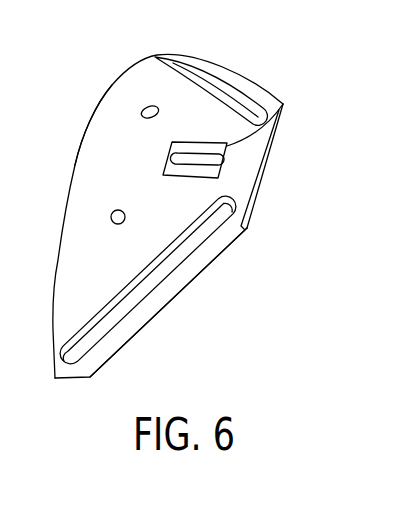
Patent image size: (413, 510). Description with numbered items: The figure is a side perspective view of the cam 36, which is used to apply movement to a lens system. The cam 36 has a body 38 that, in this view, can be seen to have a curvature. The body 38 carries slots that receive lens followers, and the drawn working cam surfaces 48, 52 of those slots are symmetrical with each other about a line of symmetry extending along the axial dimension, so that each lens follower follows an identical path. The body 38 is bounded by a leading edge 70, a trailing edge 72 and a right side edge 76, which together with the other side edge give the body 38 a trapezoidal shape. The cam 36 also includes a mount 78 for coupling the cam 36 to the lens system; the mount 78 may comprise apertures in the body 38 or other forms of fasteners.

The cam 36 is at (350, 150).
The body 38 is at (90, 121).
The working cam surface 48 is at (230, 92).
The working cam surface 52 is at (98, 311).
The leading edge 70 is at (265, 168).
The trailing edge 72 is at (66, 178).
The right side edge 76 is at (186, 280).
The mount 78 is at (277, 128).